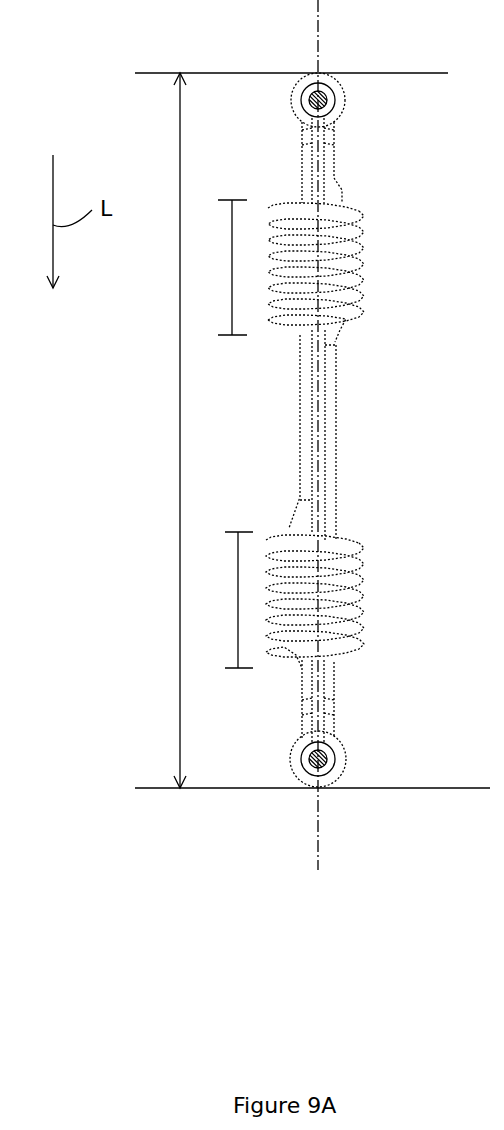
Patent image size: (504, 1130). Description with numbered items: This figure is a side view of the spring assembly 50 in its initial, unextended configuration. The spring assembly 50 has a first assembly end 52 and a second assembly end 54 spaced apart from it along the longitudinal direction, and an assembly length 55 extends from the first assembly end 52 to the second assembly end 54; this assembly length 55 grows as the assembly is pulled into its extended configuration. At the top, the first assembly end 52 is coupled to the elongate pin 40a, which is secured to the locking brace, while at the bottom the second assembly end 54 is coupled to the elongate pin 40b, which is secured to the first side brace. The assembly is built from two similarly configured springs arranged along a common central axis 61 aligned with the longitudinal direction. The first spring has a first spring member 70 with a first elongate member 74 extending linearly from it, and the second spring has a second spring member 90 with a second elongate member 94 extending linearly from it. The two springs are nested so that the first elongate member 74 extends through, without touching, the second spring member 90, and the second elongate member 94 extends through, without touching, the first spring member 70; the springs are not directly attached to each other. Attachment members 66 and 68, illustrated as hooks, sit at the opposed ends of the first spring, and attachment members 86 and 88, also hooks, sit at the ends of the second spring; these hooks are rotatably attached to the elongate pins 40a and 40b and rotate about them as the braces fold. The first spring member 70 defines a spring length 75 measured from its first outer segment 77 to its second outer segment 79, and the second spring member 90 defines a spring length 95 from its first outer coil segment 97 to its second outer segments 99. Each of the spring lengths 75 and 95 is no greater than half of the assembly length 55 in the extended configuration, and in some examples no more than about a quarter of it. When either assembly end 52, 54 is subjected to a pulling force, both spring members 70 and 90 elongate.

The elongate pin 40a is at (320, 95).
The elongate pin 40b is at (310, 752).
The spring assembly 50 is at (107, 78).
The first assembly end 52 is at (352, 96).
The second assembly end 54 is at (359, 755).
The assembly length 55 is at (180, 410).
The central axis 61 is at (318, 42).
The attachment member 66 is at (343, 116).
The attachment member 68 is at (335, 745).
The first spring member 70 is at (392, 194).
The first elongate member 74 is at (333, 413).
The spring length 75 is at (230, 238).
The first outer segment 77 is at (283, 200).
The second outer segment 79 is at (290, 332).
The attachment member 86 is at (298, 117).
The attachment member 88 is at (292, 762).
The second spring member 90 is at (406, 531).
The second elongate member 94 is at (305, 392).
The spring length 95 is at (238, 595).
The first outer coil segment 97 is at (287, 535).
The second outer segment 99 is at (283, 647).